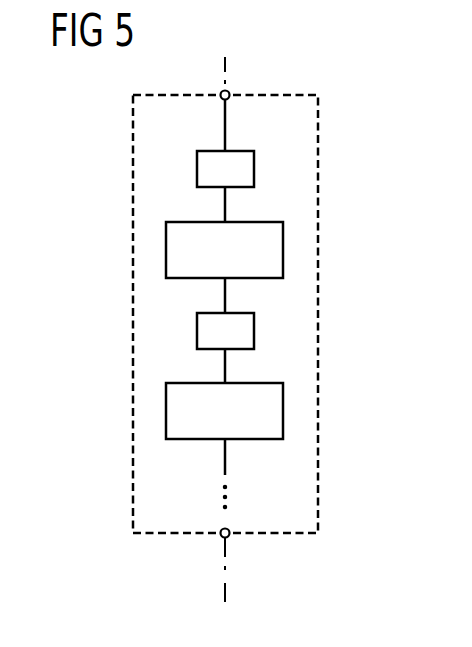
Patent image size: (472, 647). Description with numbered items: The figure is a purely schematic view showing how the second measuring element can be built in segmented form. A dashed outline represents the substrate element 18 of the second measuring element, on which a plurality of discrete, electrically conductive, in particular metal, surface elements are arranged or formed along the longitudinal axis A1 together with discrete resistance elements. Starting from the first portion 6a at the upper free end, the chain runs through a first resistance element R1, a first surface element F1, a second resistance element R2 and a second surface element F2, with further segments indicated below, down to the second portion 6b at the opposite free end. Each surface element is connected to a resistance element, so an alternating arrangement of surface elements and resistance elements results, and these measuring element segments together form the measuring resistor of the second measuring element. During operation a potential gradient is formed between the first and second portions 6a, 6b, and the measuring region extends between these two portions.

The substrate element 18 is at (318, 485).
The first portion 6a is at (228, 91).
The second portion 6b is at (221, 538).
The first resistance element R1 is at (254, 167).
The first surface element F1 is at (283, 254).
The second resistance element R2 is at (254, 330).
The second surface element F2 is at (283, 415).
The longitudinal axis A1 is at (226, 588).